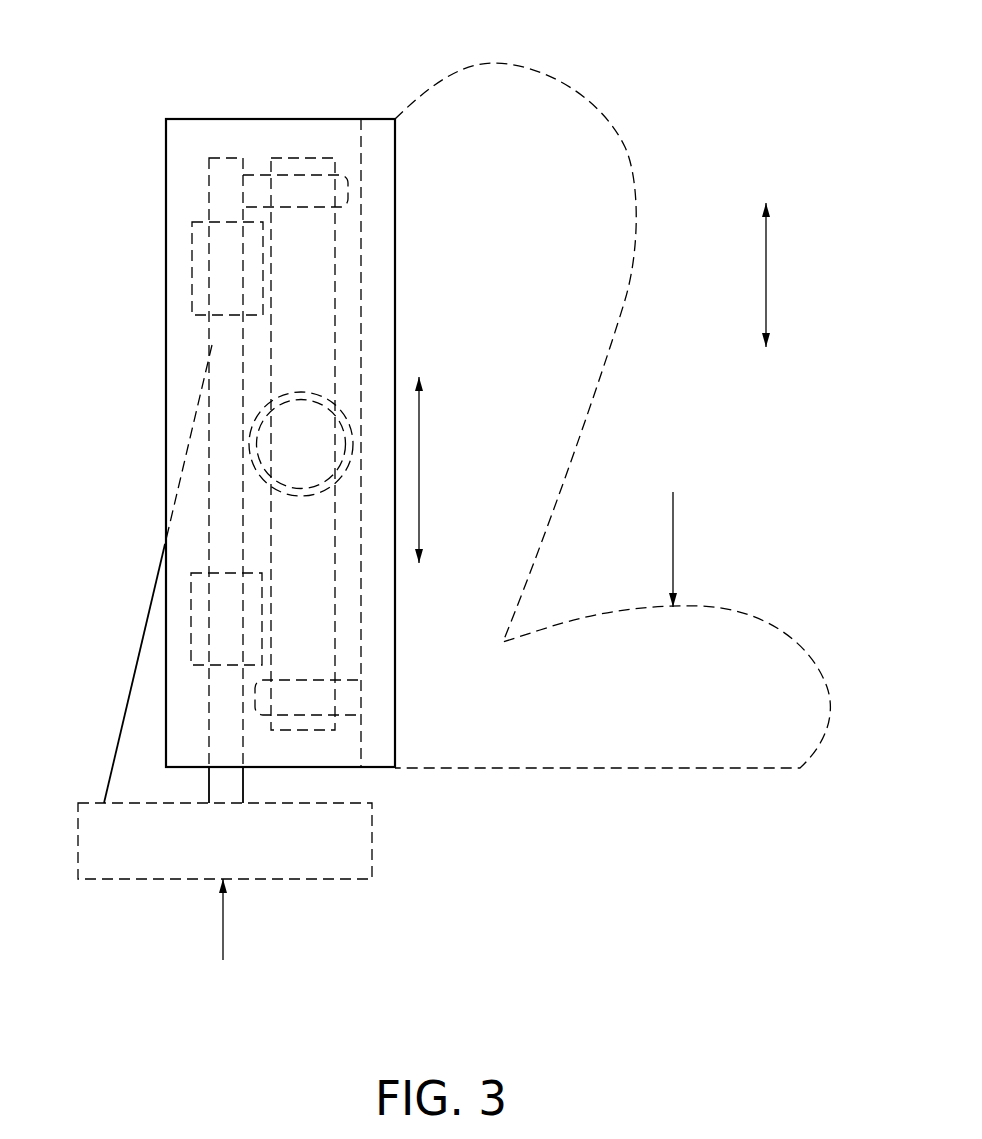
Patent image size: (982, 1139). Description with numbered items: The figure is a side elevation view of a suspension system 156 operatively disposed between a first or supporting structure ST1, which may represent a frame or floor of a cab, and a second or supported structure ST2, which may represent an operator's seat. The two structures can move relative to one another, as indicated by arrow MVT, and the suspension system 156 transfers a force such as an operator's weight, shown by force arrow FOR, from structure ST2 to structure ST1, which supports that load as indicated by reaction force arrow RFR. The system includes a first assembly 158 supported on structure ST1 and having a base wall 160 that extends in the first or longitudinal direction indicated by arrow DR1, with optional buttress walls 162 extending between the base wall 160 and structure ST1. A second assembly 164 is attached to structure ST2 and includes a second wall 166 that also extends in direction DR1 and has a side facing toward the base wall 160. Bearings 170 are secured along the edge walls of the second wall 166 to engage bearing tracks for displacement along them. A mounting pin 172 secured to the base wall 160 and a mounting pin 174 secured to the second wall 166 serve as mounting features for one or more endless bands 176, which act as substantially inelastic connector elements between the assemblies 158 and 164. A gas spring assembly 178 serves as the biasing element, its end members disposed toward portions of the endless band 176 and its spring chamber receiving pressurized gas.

The suspension system 156 is at (129, 169).
The first assembly 158 is at (137, 571).
The base wall 160 is at (220, 786).
The buttress wall 162 is at (140, 743).
The second assembly 164 is at (316, 87).
The second wall 166 is at (378, 147).
The bearings 170 is at (193, 273).
The mounting pin 172 is at (257, 175).
The mounting pin 174 is at (340, 715).
The endless band 176 is at (336, 283).
The gas spring assembly 178 is at (260, 408).
The supporting structure ST1 is at (325, 865).
The supported structure ST2 is at (625, 147).
The arrow MVT is at (420, 472).
The arrow DR1 is at (766, 277).
The force arrow FOR is at (673, 532).
The reaction force arrow RFR is at (223, 928).